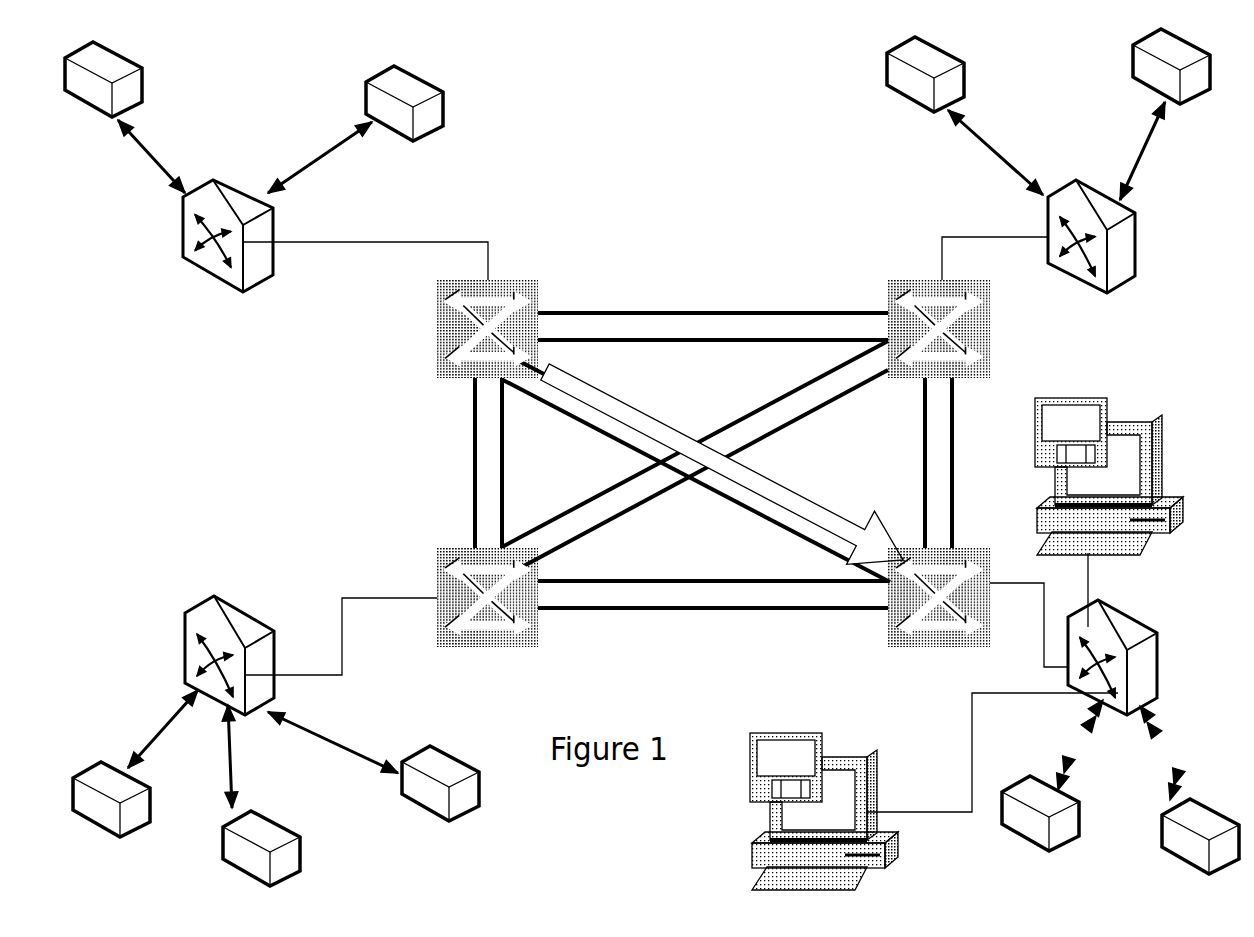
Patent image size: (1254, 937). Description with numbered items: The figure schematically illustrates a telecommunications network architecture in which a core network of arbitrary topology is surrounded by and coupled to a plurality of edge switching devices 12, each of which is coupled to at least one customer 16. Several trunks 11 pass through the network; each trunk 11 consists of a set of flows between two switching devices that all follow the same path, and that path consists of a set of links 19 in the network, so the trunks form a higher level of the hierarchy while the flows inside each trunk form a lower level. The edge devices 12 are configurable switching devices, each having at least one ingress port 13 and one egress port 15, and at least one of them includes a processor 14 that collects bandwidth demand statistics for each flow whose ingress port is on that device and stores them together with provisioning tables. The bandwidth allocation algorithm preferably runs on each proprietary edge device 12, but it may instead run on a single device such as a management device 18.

The trunk 11 is at (700, 196).
The edge switching device 12 is at (215, 278).
The ingress port 13 is at (183, 238).
The processor 14 is at (273, 276).
The egress port 15 is at (273, 232).
The customer 16 is at (962, 83).
The management device 18 is at (877, 775).
The link 19 is at (1142, 448).